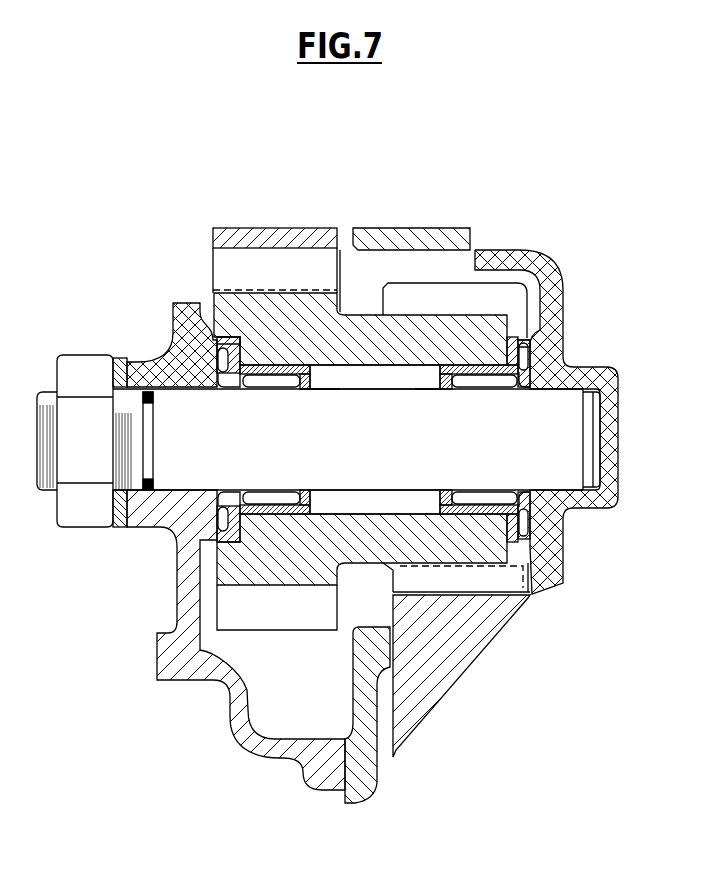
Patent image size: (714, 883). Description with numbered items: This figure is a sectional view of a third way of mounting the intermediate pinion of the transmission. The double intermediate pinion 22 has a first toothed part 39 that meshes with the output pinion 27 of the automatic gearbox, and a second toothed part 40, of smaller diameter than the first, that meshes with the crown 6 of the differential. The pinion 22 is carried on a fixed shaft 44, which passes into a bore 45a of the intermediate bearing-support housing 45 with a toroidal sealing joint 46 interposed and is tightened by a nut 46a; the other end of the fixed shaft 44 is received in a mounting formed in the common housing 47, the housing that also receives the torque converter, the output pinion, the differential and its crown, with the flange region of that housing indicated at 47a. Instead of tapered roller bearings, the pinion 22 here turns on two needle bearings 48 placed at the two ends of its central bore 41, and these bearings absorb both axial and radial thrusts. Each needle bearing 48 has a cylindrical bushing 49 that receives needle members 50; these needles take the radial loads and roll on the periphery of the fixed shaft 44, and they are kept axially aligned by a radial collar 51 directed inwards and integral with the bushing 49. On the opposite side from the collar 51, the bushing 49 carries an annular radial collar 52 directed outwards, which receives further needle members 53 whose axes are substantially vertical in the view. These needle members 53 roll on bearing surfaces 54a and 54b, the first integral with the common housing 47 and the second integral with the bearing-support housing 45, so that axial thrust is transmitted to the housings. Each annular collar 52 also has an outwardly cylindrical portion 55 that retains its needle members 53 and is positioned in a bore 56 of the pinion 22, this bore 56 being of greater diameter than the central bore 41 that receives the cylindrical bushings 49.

The crown 6 is at (472, 627).
The double intermediate pinion 22 is at (333, 327).
The output pinion 27 is at (267, 235).
The first toothed part 39 is at (242, 285).
The second toothed part 40 is at (420, 300).
The central bore 41 is at (363, 378).
The fixed shaft 44 is at (562, 453).
The intermediate bearing-support housing 45 is at (180, 652).
The bore 45a is at (153, 367).
The toroidal sealing joint 46 is at (110, 370).
The nut 46a is at (67, 373).
The common housing 47 is at (543, 267).
The cover flange 47a is at (596, 378).
The needle bearings 48 is at (318, 393).
The cylindrical bushing 49 is at (263, 383).
The needle members 50 is at (243, 385).
The radial collar 51 is at (302, 383).
The annular radial collar 52 is at (218, 350).
The needle members 53 is at (226, 377).
The bearing surface 54a is at (543, 360).
The bearing surface 54b is at (213, 366).
The outwardly cylindrical portion 55 is at (222, 358).
The bore 56 is at (510, 336).